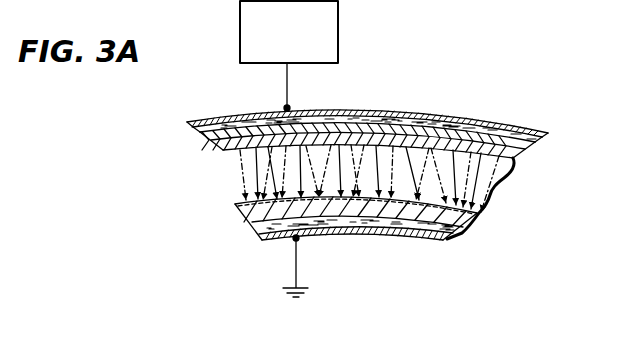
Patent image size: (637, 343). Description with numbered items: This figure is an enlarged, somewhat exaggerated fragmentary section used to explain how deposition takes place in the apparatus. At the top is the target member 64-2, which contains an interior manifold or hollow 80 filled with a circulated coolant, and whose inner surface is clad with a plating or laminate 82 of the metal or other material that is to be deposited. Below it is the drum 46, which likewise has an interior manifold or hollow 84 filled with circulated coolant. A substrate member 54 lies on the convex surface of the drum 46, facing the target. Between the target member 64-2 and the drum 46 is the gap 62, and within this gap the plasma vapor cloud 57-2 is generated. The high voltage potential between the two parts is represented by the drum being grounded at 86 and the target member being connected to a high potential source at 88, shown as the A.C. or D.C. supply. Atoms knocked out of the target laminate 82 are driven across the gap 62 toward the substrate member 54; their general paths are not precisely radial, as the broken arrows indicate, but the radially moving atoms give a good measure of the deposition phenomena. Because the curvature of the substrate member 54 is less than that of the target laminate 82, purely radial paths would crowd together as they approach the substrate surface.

The drum 46 is at (403, 231).
The substrate member 54 is at (238, 203).
The plasma vapor cloud 57-2 is at (232, 179).
The gap 62 is at (484, 215).
The target member 64-2 is at (403, 118).
The interior manifold or hollow 80 is at (452, 119).
The plating or laminate 82 is at (234, 131).
The interior manifold or hollow 84 is at (357, 220).
The ground connection 86 is at (294, 263).
The high potential source connection 88 is at (288, 81).